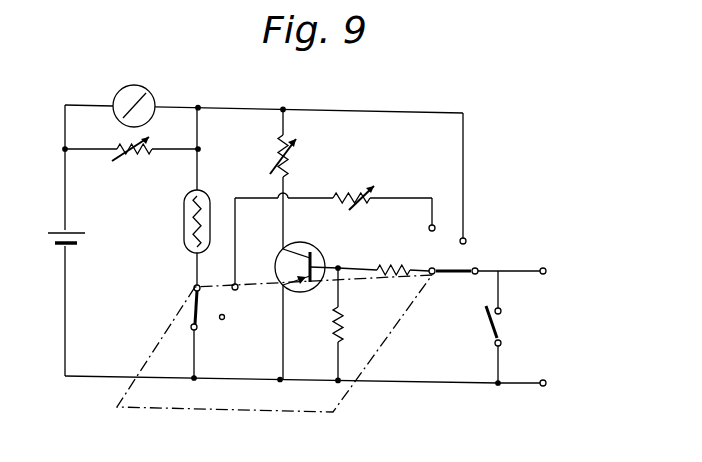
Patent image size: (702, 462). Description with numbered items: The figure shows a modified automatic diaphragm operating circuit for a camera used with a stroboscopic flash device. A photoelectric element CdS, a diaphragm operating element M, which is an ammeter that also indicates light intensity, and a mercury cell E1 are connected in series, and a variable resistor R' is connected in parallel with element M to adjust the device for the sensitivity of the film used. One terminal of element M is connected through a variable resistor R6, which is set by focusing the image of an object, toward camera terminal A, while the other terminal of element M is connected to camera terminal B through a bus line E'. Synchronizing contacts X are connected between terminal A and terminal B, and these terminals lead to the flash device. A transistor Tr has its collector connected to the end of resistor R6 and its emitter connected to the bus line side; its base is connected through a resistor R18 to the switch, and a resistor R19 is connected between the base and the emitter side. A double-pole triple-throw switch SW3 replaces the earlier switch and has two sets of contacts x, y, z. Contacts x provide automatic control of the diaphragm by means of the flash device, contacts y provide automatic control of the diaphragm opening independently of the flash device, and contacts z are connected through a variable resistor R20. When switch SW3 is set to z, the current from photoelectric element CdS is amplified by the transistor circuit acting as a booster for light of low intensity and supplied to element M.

The diaphragm operating element M is at (156, 98).
The variable resistor R' is at (132, 160).
The mercury cell E1 is at (60, 256).
The photoelectric element CdS is at (174, 196).
The variable resistor R6 is at (295, 179).
The variable resistor R20 is at (335, 197).
The transistor Tr is at (313, 245).
The resistor R18 is at (369, 256).
The resistor R19 is at (355, 324).
The synchronizing contacts X is at (485, 326).
The camera terminal A is at (552, 272).
The camera terminal B is at (552, 384).
The double-pole triple-throw switch SW3 is at (274, 360).
The bus line E' is at (416, 402).
The contacts x is at (344, 295).
The contacts y is at (354, 277).
The contacts z is at (345, 252).